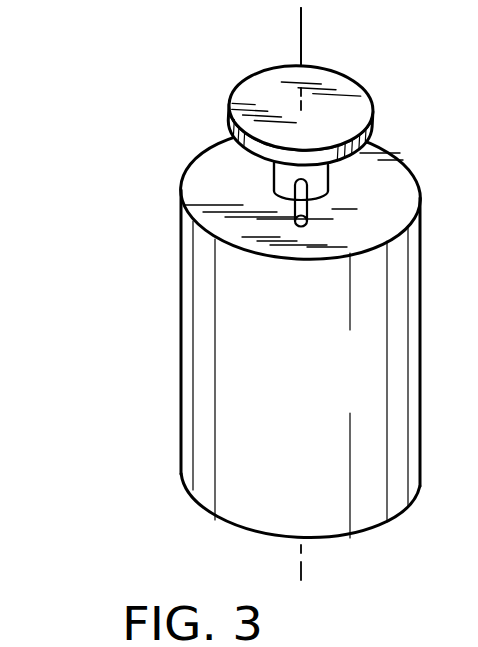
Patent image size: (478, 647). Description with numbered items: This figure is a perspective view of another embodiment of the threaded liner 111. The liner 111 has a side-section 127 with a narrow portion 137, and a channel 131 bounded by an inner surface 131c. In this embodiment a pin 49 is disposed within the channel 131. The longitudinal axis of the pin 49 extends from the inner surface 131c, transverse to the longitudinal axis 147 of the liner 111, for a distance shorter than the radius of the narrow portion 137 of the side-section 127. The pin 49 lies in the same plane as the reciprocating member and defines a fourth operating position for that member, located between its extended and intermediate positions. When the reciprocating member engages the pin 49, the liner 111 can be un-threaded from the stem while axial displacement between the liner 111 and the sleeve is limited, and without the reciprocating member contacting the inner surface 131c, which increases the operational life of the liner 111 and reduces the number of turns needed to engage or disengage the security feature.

The liner 111 is at (145, 42).
The longitudinal axis 147 is at (302, 33).
The side-section 127 is at (125, 68).
The narrow portion 137 is at (226, 128).
The channel 131 is at (167, 152).
The inner surface 131c is at (330, 178).
The pin 49 is at (309, 205).